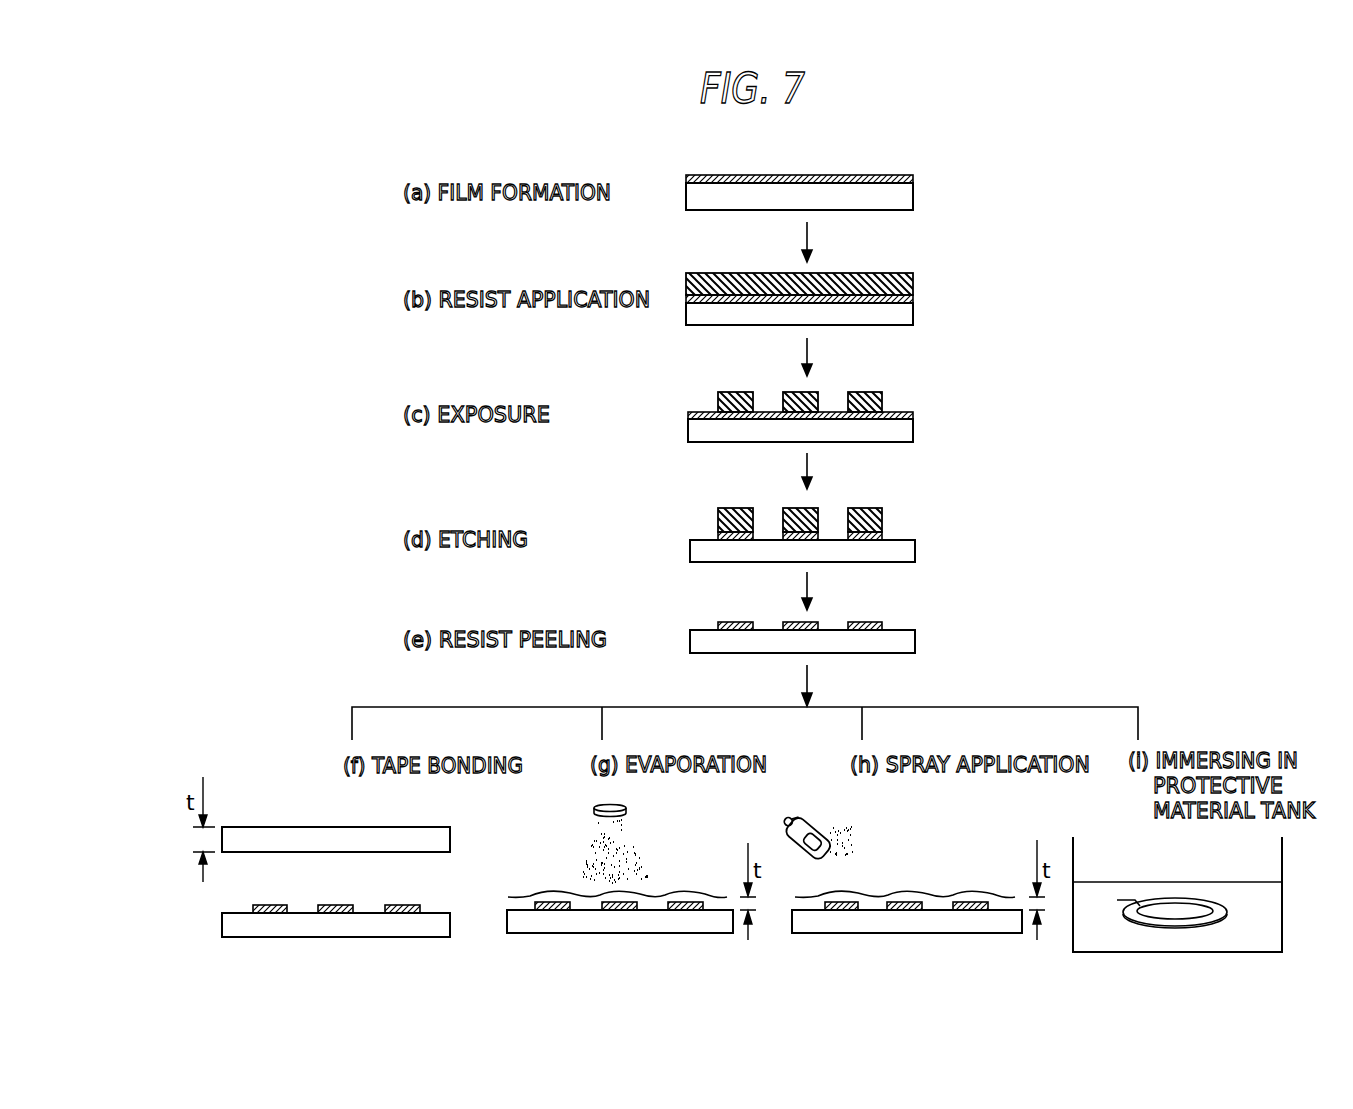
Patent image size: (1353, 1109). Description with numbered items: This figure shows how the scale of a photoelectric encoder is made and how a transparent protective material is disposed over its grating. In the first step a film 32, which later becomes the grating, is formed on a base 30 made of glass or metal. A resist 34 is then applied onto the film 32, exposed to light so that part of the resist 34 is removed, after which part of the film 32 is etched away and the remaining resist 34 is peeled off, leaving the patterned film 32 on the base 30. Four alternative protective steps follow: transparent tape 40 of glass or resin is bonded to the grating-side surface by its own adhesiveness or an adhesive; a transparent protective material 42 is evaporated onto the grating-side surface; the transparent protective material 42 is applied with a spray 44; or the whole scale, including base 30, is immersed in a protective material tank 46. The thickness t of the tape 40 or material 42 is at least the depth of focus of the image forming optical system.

The base 30 is at (913, 198).
The film 32 is at (913, 178).
The resist 34 is at (913, 279).
The transparent tape 40 is at (450, 840).
The transparent protective material 42 is at (508, 897).
The spray 44 is at (796, 836).
The protective material tank 46 is at (1282, 852).